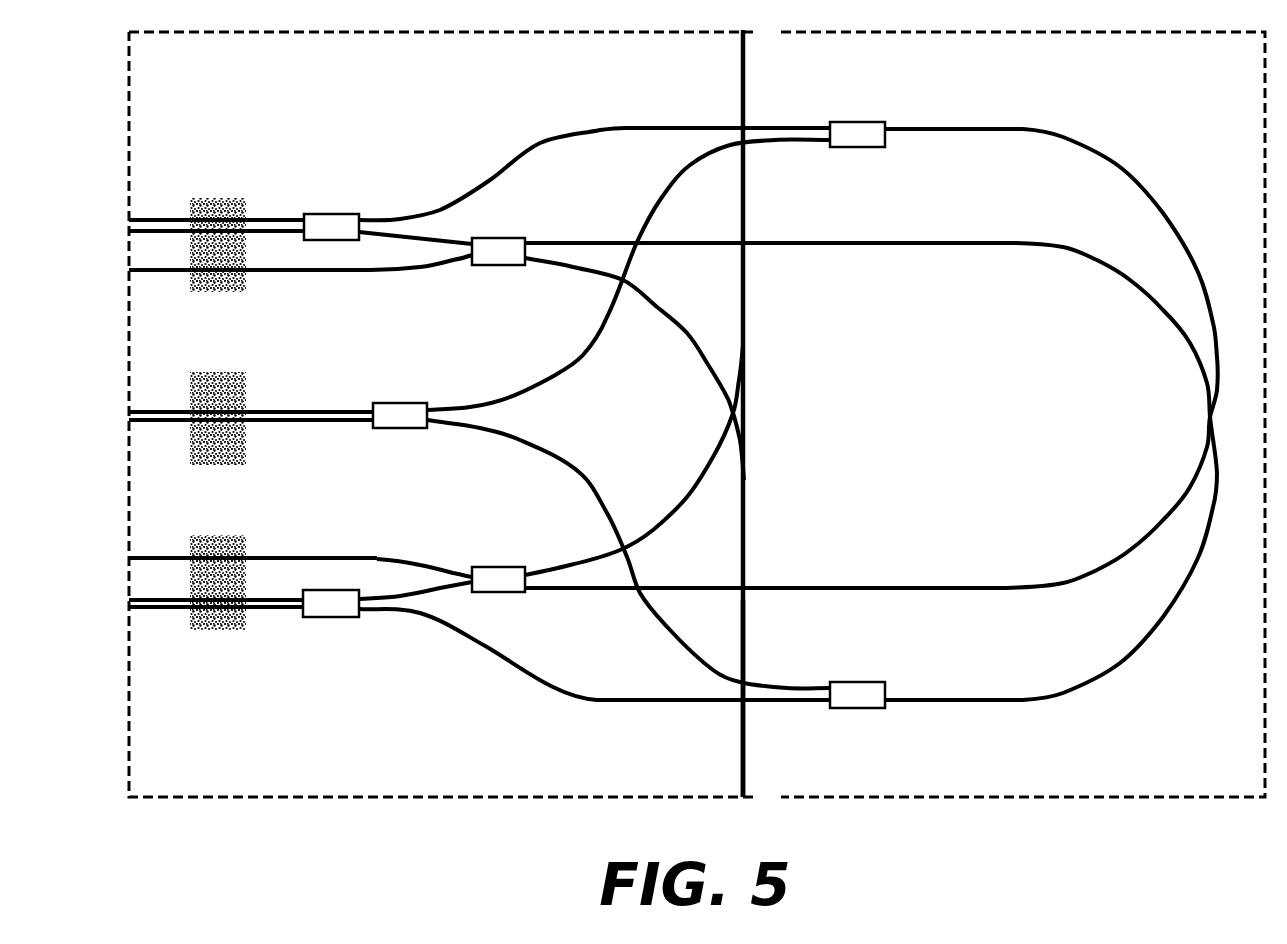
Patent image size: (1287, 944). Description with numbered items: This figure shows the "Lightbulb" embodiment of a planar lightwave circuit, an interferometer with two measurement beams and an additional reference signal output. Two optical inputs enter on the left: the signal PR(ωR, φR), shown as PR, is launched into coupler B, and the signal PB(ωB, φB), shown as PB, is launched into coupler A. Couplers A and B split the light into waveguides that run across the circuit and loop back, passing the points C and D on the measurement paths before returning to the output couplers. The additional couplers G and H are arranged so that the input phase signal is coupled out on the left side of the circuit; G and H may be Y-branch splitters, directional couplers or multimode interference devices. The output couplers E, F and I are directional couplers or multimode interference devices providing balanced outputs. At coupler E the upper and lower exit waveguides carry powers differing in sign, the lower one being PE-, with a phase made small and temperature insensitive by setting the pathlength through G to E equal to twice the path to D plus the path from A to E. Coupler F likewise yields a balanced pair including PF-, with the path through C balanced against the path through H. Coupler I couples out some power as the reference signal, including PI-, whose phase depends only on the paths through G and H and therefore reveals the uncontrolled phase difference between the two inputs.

The optical signal output coupler E is at (479, 186).
The optical signal output coupler F is at (479, 641).
The optical signal output coupler I is at (479, 414).
The coupler A is at (673, 469).
The coupler B is at (673, 360).
The coupler G is at (926, 118).
The coupler H is at (857, 681).
The path point C is at (759, 408).
The path point D is at (759, 706).
The optical power in lower waveguide exiting coupler E PE- is at (272, 219).
The optical power in lower waveguide exiting coupler I PI- is at (347, 425).
The optical power in lower waveguide exiting coupler F PF- is at (268, 614).
The optical signal input PB(ωB, φB) PB is at (458, 263).
The optical signal input PR(ωR, φR) PR is at (459, 566).